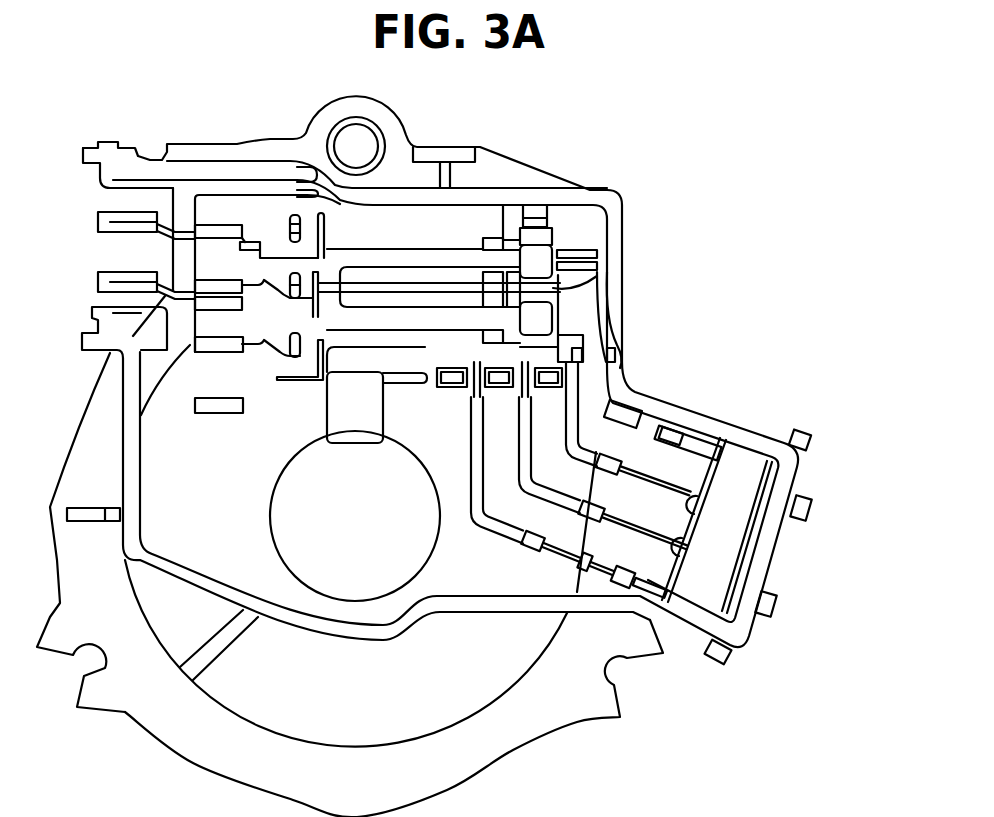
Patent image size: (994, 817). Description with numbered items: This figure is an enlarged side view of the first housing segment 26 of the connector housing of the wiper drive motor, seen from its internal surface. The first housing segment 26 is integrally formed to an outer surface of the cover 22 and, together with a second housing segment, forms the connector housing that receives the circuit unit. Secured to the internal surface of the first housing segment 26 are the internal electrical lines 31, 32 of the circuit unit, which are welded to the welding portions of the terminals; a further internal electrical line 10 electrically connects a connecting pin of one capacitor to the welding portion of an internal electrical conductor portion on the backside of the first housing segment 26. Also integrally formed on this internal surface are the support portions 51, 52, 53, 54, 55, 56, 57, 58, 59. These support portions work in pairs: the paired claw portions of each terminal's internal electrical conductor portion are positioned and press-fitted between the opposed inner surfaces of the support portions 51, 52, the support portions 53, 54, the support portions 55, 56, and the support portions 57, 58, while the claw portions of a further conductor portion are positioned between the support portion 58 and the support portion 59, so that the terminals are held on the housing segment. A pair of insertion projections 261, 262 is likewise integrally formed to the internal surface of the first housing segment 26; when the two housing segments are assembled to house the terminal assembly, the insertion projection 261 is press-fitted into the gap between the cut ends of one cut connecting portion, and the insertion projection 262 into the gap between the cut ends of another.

The internal electrical line 10 is at (296, 212).
The cover 22 is at (530, 742).
The first housing segment 26 is at (471, 380).
The internal electrical line 31 is at (281, 350).
The internal electrical line 32 is at (263, 262).
The support portion 51 is at (424, 447).
The support portion 52 is at (438, 345).
The support portion 53 is at (607, 340).
The support portion 54 is at (615, 356).
The support portion 55 is at (600, 278).
The support portion 56 is at (612, 286).
The support portion 57 is at (472, 428).
The support portion 58 is at (522, 426).
The support portion 59 is at (578, 424).
The insertion projection 261 is at (686, 553).
The insertion projection 262 is at (700, 505).